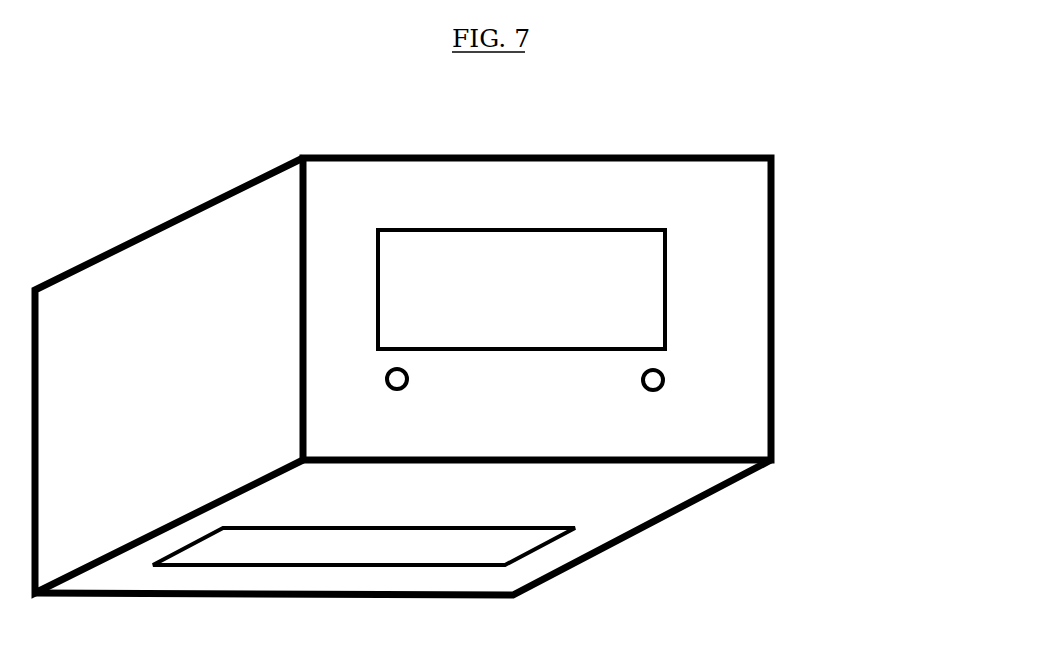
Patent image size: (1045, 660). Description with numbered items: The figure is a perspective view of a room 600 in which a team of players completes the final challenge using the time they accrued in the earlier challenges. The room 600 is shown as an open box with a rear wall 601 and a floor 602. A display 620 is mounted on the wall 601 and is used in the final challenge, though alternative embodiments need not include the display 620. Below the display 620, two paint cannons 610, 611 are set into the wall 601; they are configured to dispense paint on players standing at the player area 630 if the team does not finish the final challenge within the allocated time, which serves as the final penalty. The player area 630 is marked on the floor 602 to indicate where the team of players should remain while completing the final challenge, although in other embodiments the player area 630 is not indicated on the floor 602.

The room 600 is at (213, 341).
The wall 601 is at (468, 170).
The floor 602 is at (668, 503).
The display 620 is at (584, 248).
The paint cannon 610 is at (667, 380).
The paint cannon 611 is at (402, 381).
The player area 630 is at (512, 548).